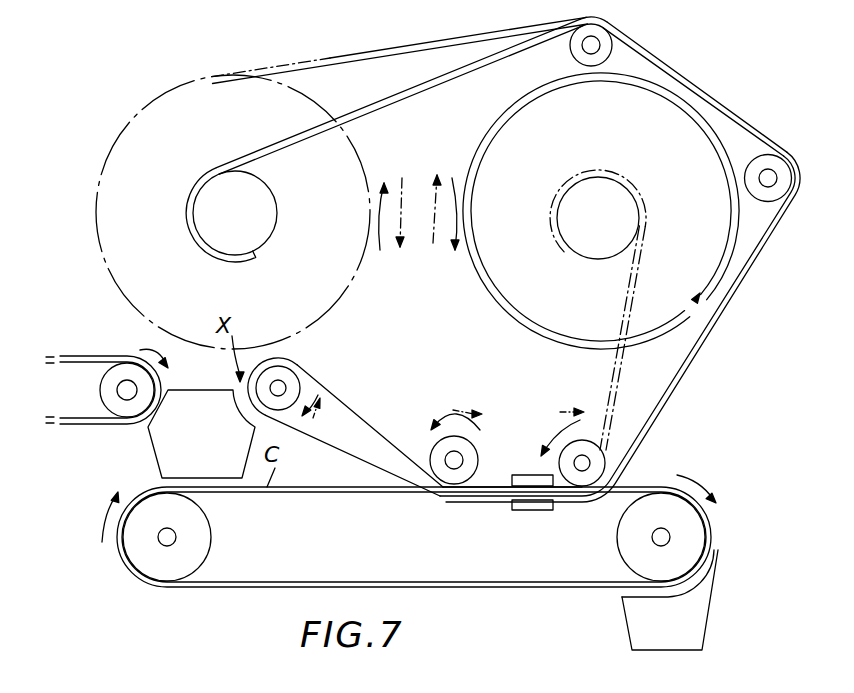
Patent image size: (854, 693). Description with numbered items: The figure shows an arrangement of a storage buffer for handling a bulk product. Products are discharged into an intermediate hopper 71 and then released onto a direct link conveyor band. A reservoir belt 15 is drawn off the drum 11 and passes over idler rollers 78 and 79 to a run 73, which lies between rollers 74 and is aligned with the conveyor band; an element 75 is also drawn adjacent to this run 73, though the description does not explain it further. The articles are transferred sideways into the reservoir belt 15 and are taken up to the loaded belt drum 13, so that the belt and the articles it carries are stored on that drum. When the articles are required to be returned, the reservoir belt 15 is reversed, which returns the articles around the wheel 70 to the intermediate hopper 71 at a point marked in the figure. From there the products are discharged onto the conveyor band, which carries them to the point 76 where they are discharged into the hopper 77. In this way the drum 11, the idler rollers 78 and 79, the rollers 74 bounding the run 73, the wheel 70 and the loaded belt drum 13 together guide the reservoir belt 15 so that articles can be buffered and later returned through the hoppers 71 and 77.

The drum 11 is at (266, 219).
The loaded belt drum 13 is at (622, 212).
The reservoir belt 15 is at (441, 82).
The wheel 70 is at (286, 378).
The intermediate hopper 71 is at (175, 445).
The run 73 is at (490, 485).
The rollers 74 is at (454, 440).
The sensor 75 is at (525, 512).
The point 76 is at (707, 569).
The hopper 77 is at (692, 619).
The idler roller 78 is at (604, 47).
The idler roller 79 is at (775, 165).